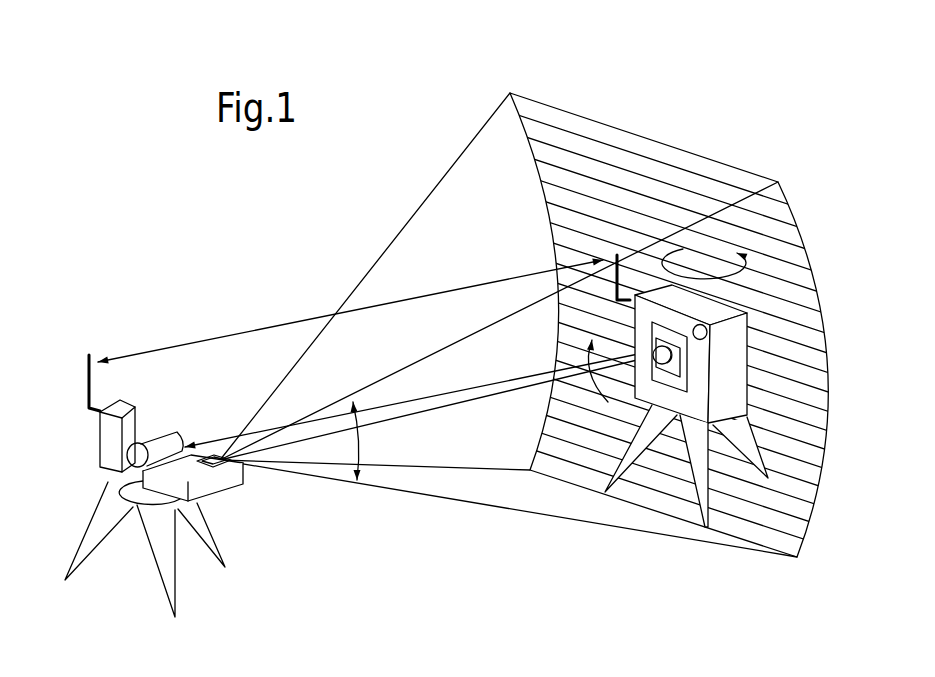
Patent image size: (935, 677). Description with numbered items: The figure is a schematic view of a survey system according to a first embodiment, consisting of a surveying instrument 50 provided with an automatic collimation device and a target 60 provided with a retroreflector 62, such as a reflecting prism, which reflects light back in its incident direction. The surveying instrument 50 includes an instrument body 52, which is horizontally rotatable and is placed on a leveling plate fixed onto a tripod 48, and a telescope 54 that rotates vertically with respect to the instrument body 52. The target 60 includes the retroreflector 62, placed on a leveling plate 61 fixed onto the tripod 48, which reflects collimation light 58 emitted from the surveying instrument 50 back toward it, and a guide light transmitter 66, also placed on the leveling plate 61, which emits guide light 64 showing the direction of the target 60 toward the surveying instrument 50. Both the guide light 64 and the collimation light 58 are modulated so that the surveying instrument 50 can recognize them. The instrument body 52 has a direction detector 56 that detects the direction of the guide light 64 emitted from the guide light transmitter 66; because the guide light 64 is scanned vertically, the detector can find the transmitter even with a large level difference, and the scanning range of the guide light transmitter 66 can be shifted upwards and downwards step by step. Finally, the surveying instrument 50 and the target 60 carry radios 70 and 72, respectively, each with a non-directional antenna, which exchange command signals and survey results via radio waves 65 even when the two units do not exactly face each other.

The tripod 48 is at (760, 457).
The surveying instrument 50 is at (768, 360).
The instrument body 52 is at (755, 391).
The telescope 54 is at (755, 333).
The direction detector 56 is at (672, 322).
The collimation light 58 is at (493, 390).
The target 60 is at (87, 512).
The leveling plate 61 is at (123, 485).
The retroreflector 62 is at (158, 431).
The guide light 64 is at (393, 493).
The radio waves 65 is at (252, 330).
The guide light transmitter 66 is at (232, 495).
The radio 70 is at (645, 290).
The radio 72 is at (100, 435).